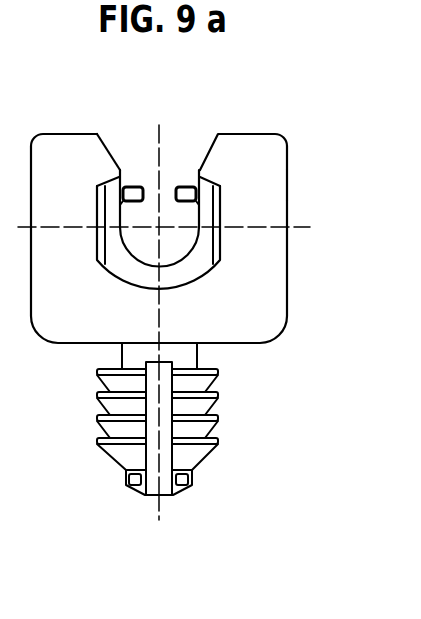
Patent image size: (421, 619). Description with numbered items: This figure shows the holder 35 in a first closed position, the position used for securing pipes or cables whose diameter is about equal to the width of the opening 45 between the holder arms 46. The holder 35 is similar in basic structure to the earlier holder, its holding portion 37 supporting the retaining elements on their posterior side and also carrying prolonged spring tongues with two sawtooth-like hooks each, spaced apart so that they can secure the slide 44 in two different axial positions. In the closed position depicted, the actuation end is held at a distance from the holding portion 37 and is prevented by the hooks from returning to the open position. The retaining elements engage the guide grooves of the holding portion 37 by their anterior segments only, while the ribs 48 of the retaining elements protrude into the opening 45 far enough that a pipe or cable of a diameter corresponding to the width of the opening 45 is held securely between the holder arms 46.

The holder 35 is at (268, 358).
The holding portion 37 is at (287, 185).
The slide 44 is at (187, 265).
The opening 45 is at (183, 185).
The holder arms 46 is at (263, 157).
The ribs 48 is at (177, 186).